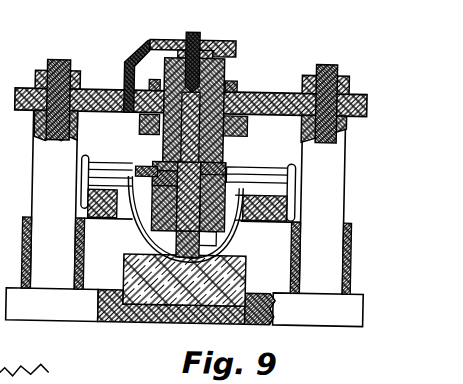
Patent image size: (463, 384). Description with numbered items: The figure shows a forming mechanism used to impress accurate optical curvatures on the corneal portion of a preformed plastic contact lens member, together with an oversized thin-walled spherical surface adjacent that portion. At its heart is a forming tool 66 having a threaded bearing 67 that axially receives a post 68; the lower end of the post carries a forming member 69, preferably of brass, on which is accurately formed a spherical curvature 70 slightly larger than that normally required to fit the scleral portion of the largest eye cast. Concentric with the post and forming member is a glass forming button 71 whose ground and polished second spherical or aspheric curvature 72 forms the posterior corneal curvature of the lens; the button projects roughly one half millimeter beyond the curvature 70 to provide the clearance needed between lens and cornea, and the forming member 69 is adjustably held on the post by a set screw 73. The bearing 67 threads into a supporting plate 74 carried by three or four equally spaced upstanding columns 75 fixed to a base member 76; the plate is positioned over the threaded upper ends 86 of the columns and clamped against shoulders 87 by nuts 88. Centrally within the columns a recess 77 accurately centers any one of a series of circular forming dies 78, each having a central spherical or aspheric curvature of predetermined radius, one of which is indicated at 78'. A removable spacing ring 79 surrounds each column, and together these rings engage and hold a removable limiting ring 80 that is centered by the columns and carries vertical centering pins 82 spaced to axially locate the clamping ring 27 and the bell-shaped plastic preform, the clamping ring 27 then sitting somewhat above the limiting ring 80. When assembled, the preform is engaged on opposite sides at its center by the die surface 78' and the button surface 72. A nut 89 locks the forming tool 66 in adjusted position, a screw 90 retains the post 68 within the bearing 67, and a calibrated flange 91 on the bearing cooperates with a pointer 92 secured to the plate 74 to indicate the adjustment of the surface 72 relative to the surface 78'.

The clamping ring 27 is at (256, 167).
The forming tool 66 is at (210, 87).
The threaded bearing 67 is at (224, 68).
The post 68 is at (236, 91).
The forming member 69 is at (238, 244).
The spherical curvature 70 is at (231, 249).
The forming button 71 is at (214, 236).
The second spherical or aspheric curvature 72 is at (196, 220).
The set screw 73 is at (152, 163).
The supporting frame or plate 74 is at (366, 103).
The upstanding columns 75 is at (341, 178).
The base member 76 is at (353, 308).
The recess 77 is at (252, 297).
The forming die 78 is at (171, 319).
The spherical curvature of die 78' is at (165, 279).
The spacing ring 79 is at (353, 250).
The limiting ring 80 is at (108, 213).
The centering pins 82 is at (87, 158).
The threaded upper ends 86 is at (333, 68).
The shoulders 87 is at (347, 127).
The nuts 88 is at (348, 79).
The nut 89 is at (234, 131).
The screw 90 is at (186, 36).
The calibrated flange 91 is at (235, 44).
The pointer 92 is at (125, 58).